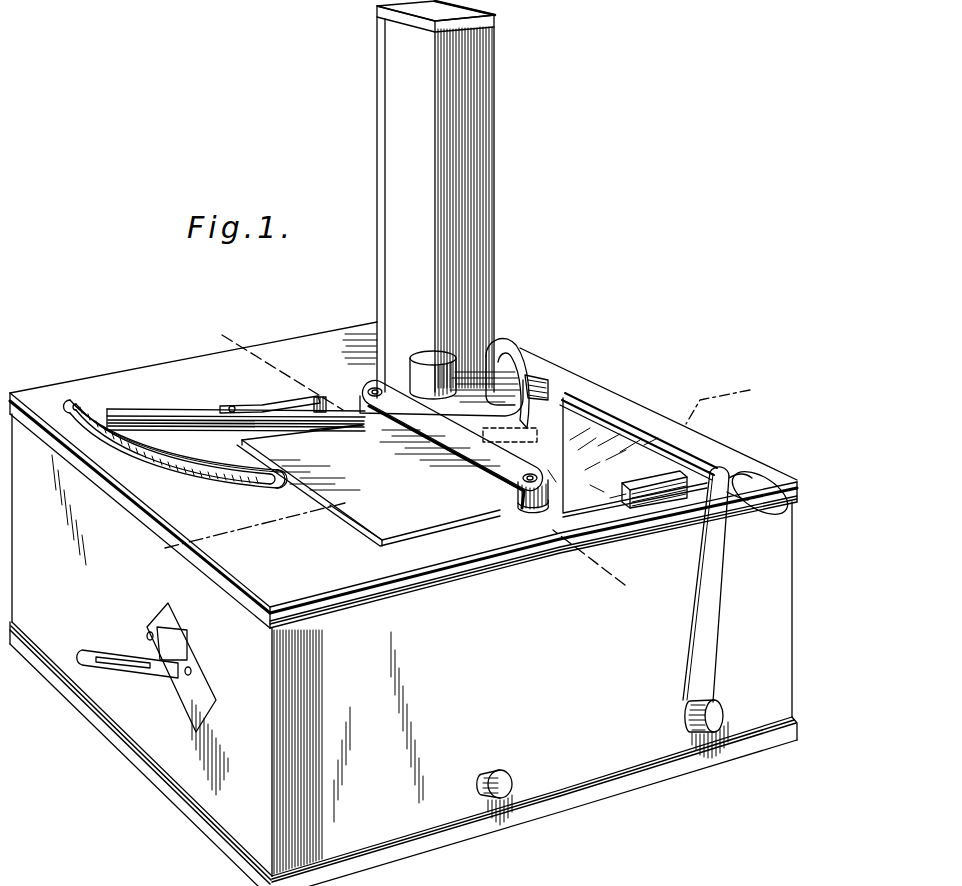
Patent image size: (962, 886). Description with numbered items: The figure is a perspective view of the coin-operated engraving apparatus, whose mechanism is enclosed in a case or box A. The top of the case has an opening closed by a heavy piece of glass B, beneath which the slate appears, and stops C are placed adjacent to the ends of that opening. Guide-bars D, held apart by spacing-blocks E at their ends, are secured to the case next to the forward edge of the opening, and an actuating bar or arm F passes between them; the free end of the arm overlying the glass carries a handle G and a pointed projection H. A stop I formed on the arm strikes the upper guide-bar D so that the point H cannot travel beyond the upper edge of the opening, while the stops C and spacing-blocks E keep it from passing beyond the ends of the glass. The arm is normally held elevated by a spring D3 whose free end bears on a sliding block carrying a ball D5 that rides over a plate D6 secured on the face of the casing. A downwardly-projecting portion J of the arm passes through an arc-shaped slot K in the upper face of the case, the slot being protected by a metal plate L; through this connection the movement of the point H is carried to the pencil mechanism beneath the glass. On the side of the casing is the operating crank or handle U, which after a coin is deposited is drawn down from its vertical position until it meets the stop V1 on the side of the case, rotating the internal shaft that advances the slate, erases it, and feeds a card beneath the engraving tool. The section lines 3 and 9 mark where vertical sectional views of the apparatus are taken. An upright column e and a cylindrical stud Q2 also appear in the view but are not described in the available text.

The case or box A is at (403, 604).
The upright column e is at (474, 297).
The knob or cylindrical stud Q2 is at (422, 360).
The handle G is at (520, 362).
The stops C is at (549, 380).
The pointed projection H is at (578, 394).
The glass B is at (627, 457).
The section line 3— 3 is at (454, 469).
The section line 9— 9 is at (420, 462).
The spring D3 is at (298, 408).
The actuating bar or arm F is at (218, 412).
The stop I is at (324, 399).
The spacing-blocks E is at (355, 410).
The guide-bars D is at (478, 452).
The ball D5 is at (313, 427).
The plate D6 is at (372, 515).
The downwardly-projecting portion J is at (122, 440).
The arc-shaped slot K is at (237, 484).
The metal plate L is at (283, 481).
The operating crank or handle U is at (717, 622).
The stop V1 is at (502, 778).